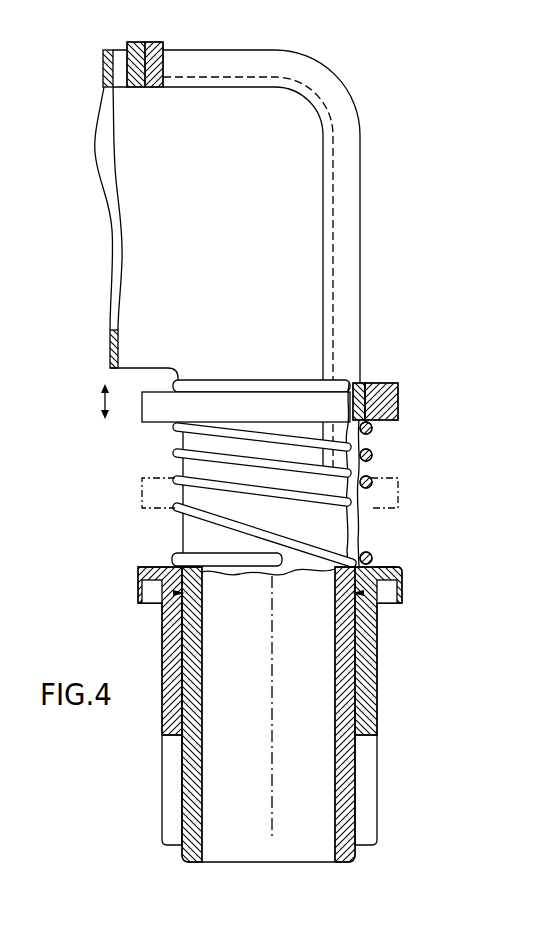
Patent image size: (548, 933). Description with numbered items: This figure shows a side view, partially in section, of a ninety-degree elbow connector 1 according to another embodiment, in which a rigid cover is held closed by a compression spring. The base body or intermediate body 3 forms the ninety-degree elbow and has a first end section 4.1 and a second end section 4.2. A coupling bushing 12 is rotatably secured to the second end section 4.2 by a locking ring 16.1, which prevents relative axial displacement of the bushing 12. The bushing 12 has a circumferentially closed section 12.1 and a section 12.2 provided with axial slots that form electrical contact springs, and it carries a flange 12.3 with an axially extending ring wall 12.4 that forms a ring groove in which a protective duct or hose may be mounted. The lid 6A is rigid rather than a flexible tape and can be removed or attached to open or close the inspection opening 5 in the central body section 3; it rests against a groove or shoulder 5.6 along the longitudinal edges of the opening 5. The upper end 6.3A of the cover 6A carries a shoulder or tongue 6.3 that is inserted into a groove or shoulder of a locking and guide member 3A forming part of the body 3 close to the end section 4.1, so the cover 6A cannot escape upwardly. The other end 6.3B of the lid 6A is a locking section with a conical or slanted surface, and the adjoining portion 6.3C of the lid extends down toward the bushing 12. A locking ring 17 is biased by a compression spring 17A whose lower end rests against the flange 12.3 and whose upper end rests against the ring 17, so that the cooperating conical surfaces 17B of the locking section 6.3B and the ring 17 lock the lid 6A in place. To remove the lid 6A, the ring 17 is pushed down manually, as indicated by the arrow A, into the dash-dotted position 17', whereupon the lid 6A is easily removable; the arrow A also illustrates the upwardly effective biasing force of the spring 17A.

The filling tube assembly 1 is at (402, 93).
The base body or intermediate body 3 is at (252, 296).
The locking and guide member 3A is at (131, 43).
The end section 4.1 is at (112, 254).
The second end section 4.2 is at (320, 839).
The inspection opening 5 is at (318, 190).
The groove or shoulder 5.6 is at (328, 228).
The lid 6A is at (390, 264).
The shoulder or tongue 6.3 is at (147, 87).
The upper end 6.3A is at (187, 66).
The locking section 6.3B is at (367, 386).
The sleeve flexible section 6.3C is at (356, 466).
The coupling bushing 12 is at (392, 684).
The section 12.1 is at (366, 648).
The section 12.2 is at (366, 808).
The flange 12.3 is at (384, 568).
The ring wall 12.4 is at (403, 586).
The locking ring 16.1 is at (336, 610).
The locking ring 17 is at (296, 399).
The dash-dotted position 17' is at (246, 489).
The compression spring 17A is at (178, 515).
The conical surfaces 17B is at (384, 420).
The arrow A is at (100, 404).